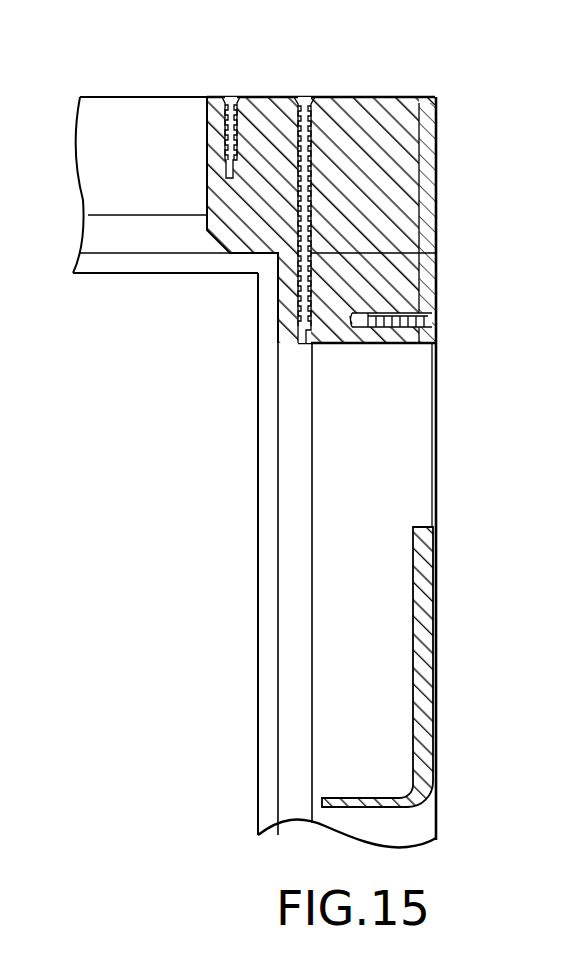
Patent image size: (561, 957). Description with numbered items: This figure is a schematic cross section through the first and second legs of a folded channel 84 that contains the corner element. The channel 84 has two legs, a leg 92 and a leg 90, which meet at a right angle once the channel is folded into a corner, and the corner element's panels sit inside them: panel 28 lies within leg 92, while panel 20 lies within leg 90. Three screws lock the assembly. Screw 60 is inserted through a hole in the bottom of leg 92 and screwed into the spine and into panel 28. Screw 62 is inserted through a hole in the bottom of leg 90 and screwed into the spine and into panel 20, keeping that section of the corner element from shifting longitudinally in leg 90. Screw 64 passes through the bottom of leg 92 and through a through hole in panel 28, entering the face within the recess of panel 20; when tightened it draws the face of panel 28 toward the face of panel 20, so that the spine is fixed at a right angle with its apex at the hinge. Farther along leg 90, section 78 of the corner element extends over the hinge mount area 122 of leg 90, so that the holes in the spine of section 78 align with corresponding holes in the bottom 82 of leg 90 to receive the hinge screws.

The panel 20 is at (414, 263).
The panel 28 is at (271, 99).
The screw 60 is at (229, 98).
The screw 62 is at (418, 310).
The screw 64 is at (306, 98).
The section 78 is at (430, 561).
The bottom 82 is at (160, 97).
The channel 84 is at (90, 100).
The leg 90 is at (432, 812).
The leg 92 is at (125, 96).
The hinge mount area 122 is at (428, 650).